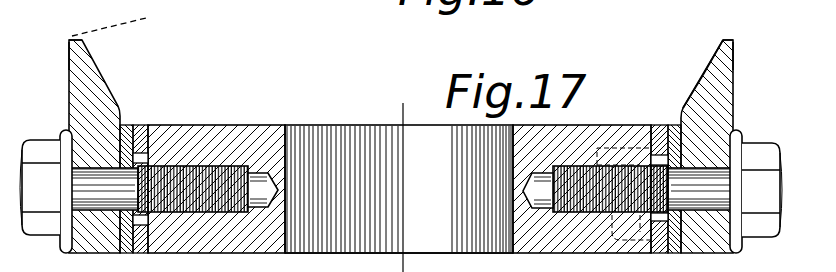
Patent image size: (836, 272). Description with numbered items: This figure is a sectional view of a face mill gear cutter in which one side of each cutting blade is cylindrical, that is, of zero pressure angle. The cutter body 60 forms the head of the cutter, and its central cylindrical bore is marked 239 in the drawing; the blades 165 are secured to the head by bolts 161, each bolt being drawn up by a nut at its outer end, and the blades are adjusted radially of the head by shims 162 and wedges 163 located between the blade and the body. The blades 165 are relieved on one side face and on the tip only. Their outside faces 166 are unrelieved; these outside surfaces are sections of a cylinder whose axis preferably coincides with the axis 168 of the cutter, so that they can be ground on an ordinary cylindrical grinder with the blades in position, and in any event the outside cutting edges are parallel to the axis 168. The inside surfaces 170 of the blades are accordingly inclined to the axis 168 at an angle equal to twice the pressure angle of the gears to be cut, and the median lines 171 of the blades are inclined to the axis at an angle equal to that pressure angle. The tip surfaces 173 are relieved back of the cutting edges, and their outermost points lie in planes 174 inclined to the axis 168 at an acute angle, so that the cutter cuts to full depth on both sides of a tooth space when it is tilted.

The body 60 is at (261, 125).
The bolts 161 is at (42, 225).
The shims 162 is at (127, 125).
The wedges 163 is at (145, 127).
The blades 165 is at (83, 100).
The outside faces 166 is at (69, 58).
The axis 168 is at (403, 112).
The inside surfaces 170 is at (708, 80).
The median lines 171 is at (72, 40).
The tip surfaces 173 is at (731, 40).
The planes 174 is at (113, 26).
The cylindrical portion 239 is at (307, 253).